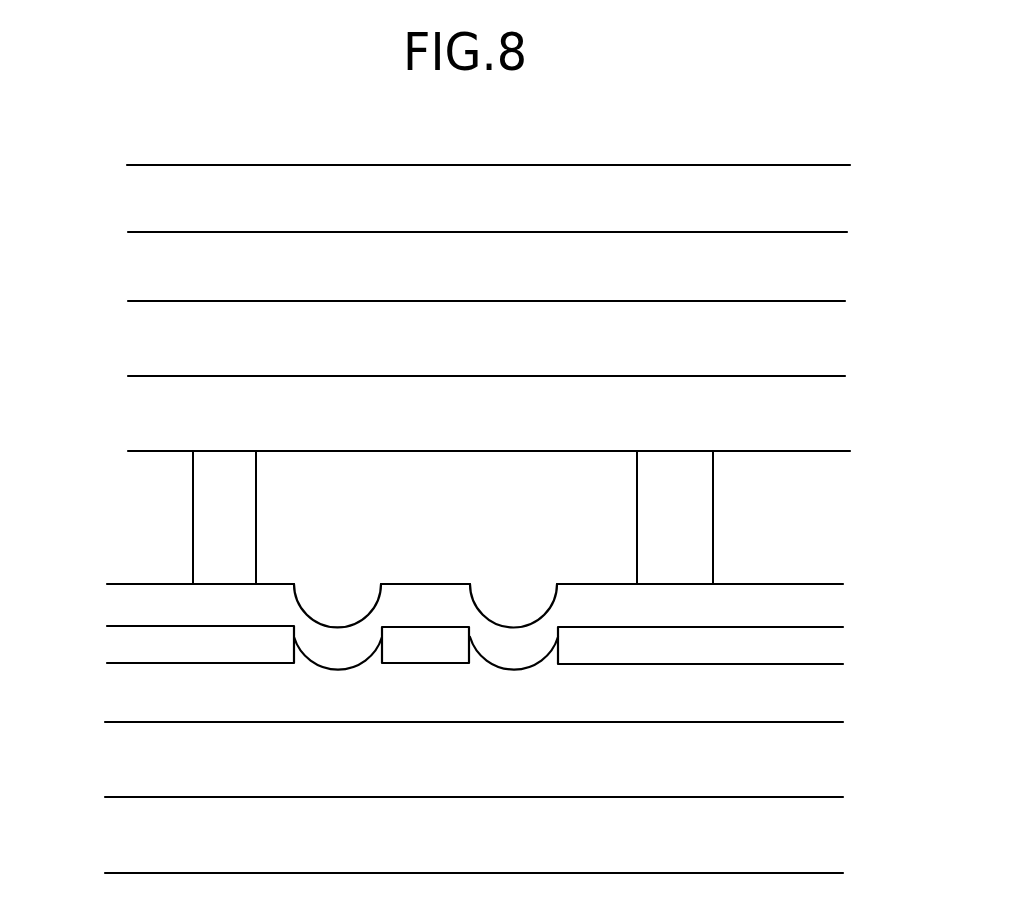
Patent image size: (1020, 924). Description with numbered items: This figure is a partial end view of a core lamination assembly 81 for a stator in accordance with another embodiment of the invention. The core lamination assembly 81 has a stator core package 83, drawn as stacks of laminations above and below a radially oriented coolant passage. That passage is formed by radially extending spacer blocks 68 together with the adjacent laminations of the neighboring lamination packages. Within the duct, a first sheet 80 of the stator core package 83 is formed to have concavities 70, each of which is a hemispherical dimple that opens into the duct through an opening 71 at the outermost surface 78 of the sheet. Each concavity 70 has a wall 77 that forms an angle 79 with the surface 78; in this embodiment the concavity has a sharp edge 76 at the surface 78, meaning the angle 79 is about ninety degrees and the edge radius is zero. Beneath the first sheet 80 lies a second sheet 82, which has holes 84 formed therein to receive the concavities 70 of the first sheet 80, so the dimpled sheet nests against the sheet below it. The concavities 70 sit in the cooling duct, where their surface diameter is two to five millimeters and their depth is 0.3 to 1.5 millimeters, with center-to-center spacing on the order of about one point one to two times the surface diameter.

The spacer block 68 is at (215, 517).
The concavity 70 is at (503, 597).
The opening 71 is at (313, 590).
The sharp edge 76 is at (294, 581).
The wall 77 is at (293, 592).
The outermost surface 78 is at (615, 584).
The angle 79 is at (394, 595).
The first sheet 80 is at (835, 602).
The core lamination assembly 81 is at (887, 152).
The second sheet 82 is at (835, 645).
The stator core package 83 is at (860, 165).
The hole 84 is at (300, 661).